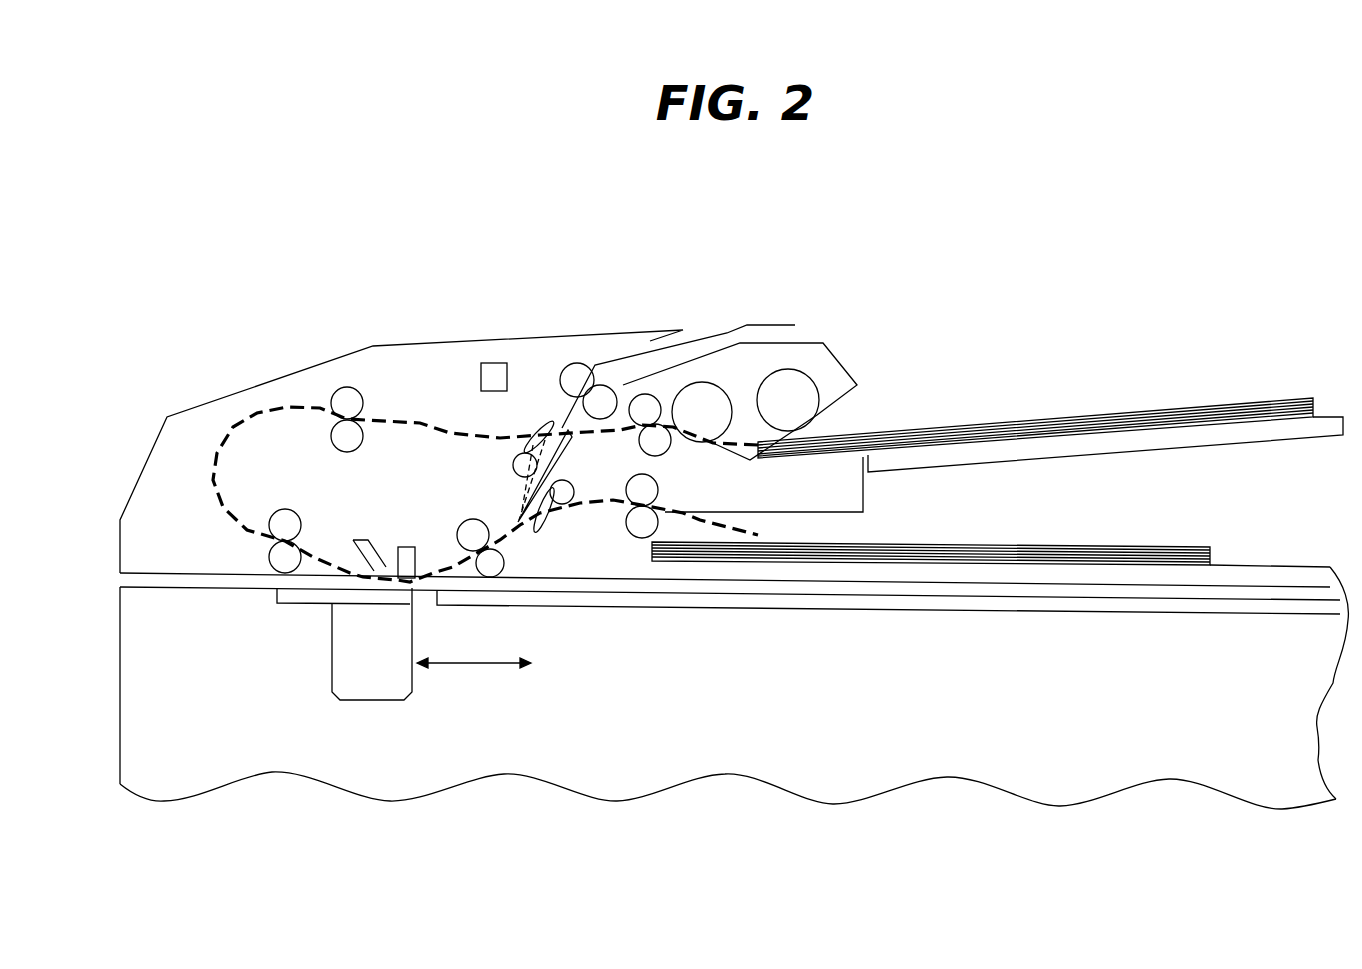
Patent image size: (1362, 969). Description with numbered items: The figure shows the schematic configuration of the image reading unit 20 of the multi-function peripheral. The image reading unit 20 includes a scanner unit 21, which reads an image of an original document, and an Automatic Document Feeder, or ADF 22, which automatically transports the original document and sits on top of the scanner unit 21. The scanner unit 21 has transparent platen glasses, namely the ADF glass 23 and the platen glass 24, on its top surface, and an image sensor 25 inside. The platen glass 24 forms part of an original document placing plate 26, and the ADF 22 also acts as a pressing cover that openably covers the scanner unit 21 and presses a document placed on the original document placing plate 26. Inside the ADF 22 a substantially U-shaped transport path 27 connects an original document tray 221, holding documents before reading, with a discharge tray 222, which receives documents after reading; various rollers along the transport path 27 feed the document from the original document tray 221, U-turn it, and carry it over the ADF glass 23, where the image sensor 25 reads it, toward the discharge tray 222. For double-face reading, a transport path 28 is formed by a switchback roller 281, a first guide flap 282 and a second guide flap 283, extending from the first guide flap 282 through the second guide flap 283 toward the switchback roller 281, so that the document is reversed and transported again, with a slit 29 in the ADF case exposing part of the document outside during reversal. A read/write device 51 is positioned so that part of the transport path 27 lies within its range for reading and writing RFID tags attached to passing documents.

The image reading unit 20 is at (418, 227).
The scanner unit 21 is at (140, 664).
The Automatic Document Feeder (ADF) 22 is at (270, 381).
The ADF glass 23 is at (300, 604).
The platen glass 24 is at (618, 607).
The image sensor 25 is at (370, 702).
The original document placing plate 26 is at (744, 594).
The transport path 27 is at (418, 420).
The transport path 28 is at (661, 347).
The slit 29 is at (748, 326).
The read/write device 51 is at (495, 362).
The original document tray 221 is at (1047, 438).
The discharge tray 222 is at (1047, 568).
The switchback roller 281 is at (564, 362).
The first guide flap 282 is at (548, 522).
The second guide flap 283 is at (514, 464).